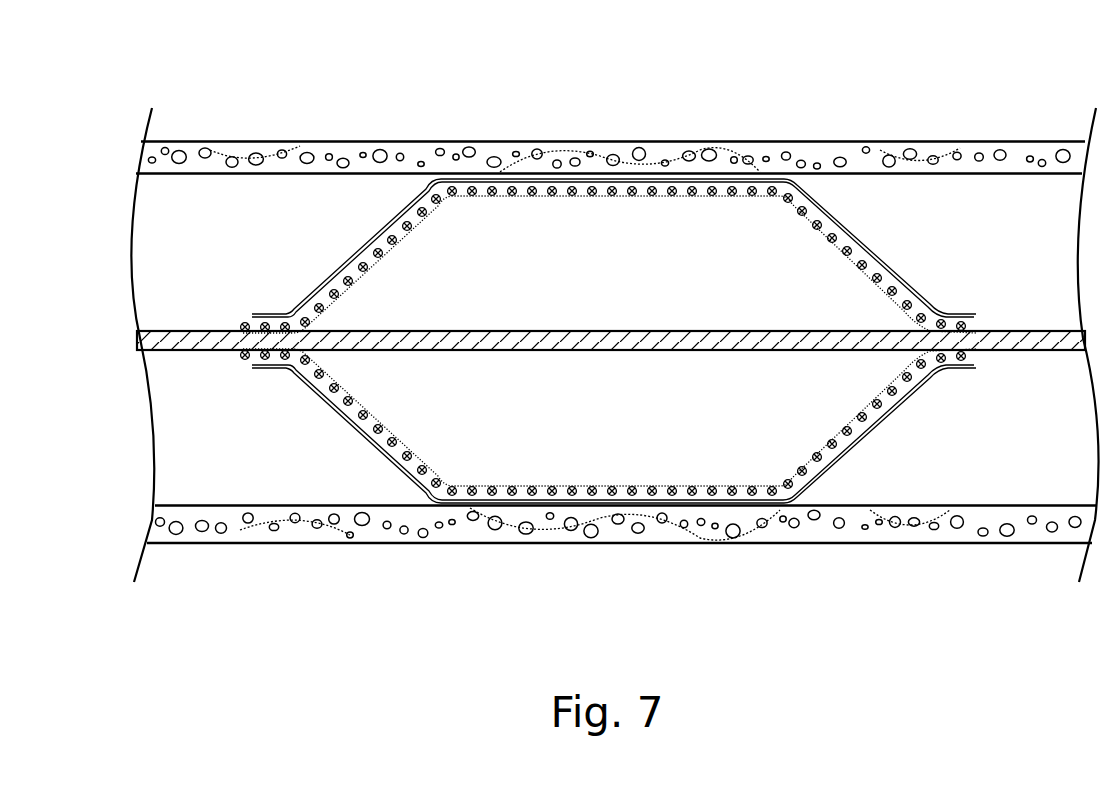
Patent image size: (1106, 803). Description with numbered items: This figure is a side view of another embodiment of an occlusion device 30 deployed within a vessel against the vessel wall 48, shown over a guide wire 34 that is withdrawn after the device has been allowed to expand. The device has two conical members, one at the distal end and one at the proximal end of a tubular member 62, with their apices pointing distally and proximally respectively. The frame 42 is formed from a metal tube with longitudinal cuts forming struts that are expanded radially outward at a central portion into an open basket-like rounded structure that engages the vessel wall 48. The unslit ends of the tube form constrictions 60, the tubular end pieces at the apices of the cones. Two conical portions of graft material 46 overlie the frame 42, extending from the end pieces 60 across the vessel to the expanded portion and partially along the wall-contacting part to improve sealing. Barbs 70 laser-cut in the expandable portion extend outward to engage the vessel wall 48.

The occlusion device 30 is at (297, 288).
The guide wire 34 is at (192, 350).
The frame 42 is at (517, 141).
The graft material 46 is at (863, 247).
The vessel wall 48 is at (346, 141).
The constriction 60 is at (265, 365).
The tubular member 62 is at (398, 465).
The barb 70 is at (683, 141).